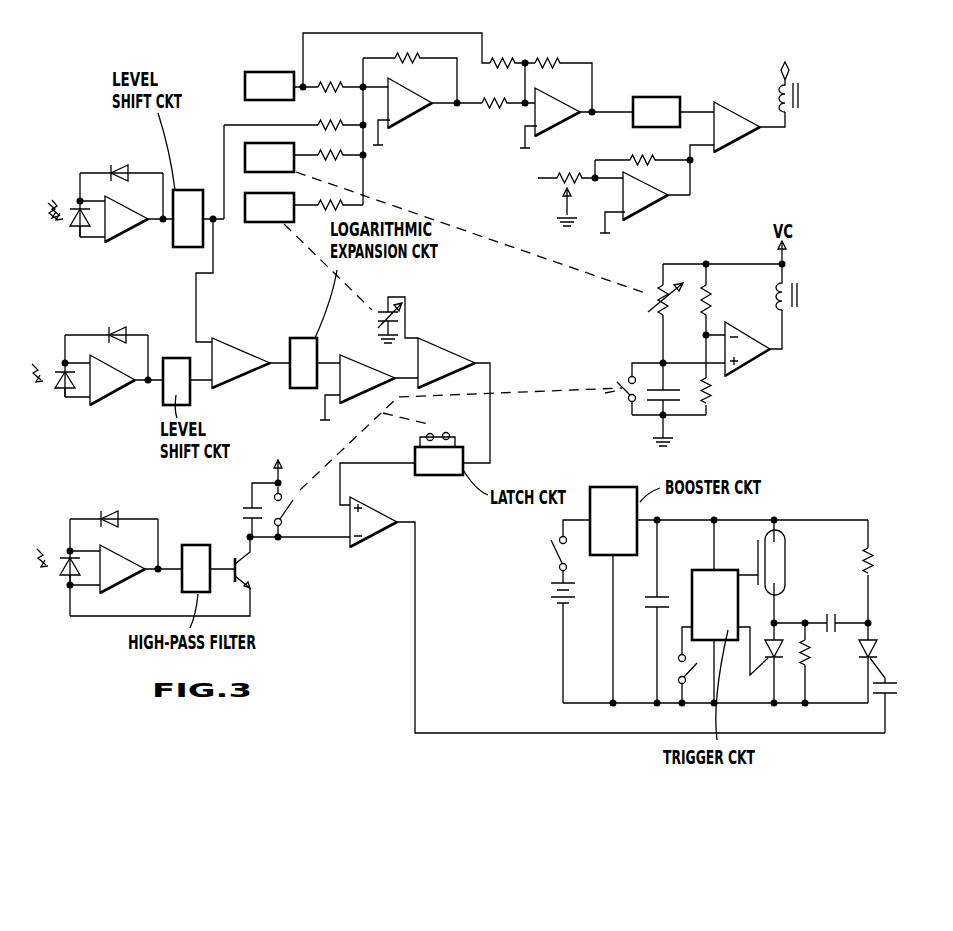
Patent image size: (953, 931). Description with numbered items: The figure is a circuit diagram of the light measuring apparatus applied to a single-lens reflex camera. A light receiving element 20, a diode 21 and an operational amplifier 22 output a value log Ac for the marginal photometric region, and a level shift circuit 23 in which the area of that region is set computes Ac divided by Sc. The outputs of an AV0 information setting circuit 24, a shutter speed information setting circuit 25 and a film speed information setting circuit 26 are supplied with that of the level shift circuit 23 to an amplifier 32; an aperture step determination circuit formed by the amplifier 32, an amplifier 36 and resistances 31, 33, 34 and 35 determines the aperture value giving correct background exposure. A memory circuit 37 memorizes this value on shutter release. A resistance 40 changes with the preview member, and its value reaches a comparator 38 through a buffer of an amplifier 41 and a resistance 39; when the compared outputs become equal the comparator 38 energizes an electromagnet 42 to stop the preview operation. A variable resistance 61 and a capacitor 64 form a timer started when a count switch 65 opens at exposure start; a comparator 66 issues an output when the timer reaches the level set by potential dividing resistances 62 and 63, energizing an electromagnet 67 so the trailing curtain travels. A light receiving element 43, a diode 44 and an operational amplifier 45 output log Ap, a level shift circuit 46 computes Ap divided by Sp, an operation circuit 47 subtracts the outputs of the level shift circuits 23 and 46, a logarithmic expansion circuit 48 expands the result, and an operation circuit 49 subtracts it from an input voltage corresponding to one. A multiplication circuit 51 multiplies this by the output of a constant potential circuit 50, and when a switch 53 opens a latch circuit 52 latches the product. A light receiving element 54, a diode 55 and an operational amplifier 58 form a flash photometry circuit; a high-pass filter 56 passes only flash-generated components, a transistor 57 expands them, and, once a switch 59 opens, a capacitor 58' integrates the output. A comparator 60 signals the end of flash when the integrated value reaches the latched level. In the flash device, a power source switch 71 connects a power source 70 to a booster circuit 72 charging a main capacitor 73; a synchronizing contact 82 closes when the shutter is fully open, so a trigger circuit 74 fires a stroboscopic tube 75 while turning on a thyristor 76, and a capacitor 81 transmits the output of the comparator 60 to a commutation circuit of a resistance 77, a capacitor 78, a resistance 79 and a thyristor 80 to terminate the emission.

The light receiving element 20 is at (70, 231).
The diode 21 is at (119, 165).
The operational amplifier 22 is at (132, 234).
The level shift circuit 23 is at (186, 190).
The AV0 information setting circuit 24 is at (268, 72).
The shutter speed information setting circuit 25 is at (246, 143).
The film speed information setting circuit 26 is at (262, 222).
The resistance 31 is at (410, 56).
The amplifier 32 is at (418, 107).
The resistance 33 is at (502, 60).
The resistance 34 is at (548, 60).
The resistance 35 is at (492, 105).
The amplifier 36 is at (557, 97).
The memory circuit 37 is at (657, 97).
The comparator 38 is at (733, 103).
The resistance 39 is at (632, 158).
The resistance 40 is at (569, 175).
The amplifier 41 is at (655, 208).
The electromagnet 42 is at (801, 105).
The light receiving element 43 is at (60, 393).
The diode 44 is at (119, 328).
The operational amplifier 45 is at (110, 398).
The level shift circuit 46 is at (176, 358).
The operation circuit 47 is at (244, 350).
The logarithmic expansion circuit 48 is at (300, 338).
The operation circuit 49 is at (352, 355).
The constant potential circuit 50 is at (381, 310).
The multiplication circuit 51 is at (458, 340).
The latch circuit 52 is at (450, 476).
The switch 53 is at (437, 433).
The light receiving element 54 is at (62, 585).
The diode 55 is at (109, 512).
The high-pass filter 56 is at (200, 545).
The transistor 57 is at (256, 573).
The operational amplifier 58 is at (127, 580).
The capacitor 58' is at (250, 488).
The switch 59 is at (292, 508).
The comparator 60 is at (386, 528).
The variable resistance 61 is at (648, 307).
The potential dividing resistance 62 is at (699, 300).
The potential dividing resistance 63 is at (713, 392).
The capacitor 64 is at (671, 402).
The count switch 65 is at (620, 400).
The comparator 66 is at (762, 353).
The electromagnet 67 is at (800, 298).
The power source 70 is at (550, 590).
The power source switch 71 is at (550, 553).
The booster circuit 72 is at (610, 487).
The main capacitor 73 is at (664, 596).
The trigger circuit 74 is at (733, 570).
The stroboscopic tube 75 is at (786, 560).
The thyristor 76 is at (770, 660).
The resistance 77 is at (812, 660).
The capacitor 78 is at (830, 616).
The resistance 79 is at (877, 562).
The thyristor 80 is at (878, 648).
The capacitor 81 is at (900, 690).
The synchronizing contact 82 is at (693, 666).